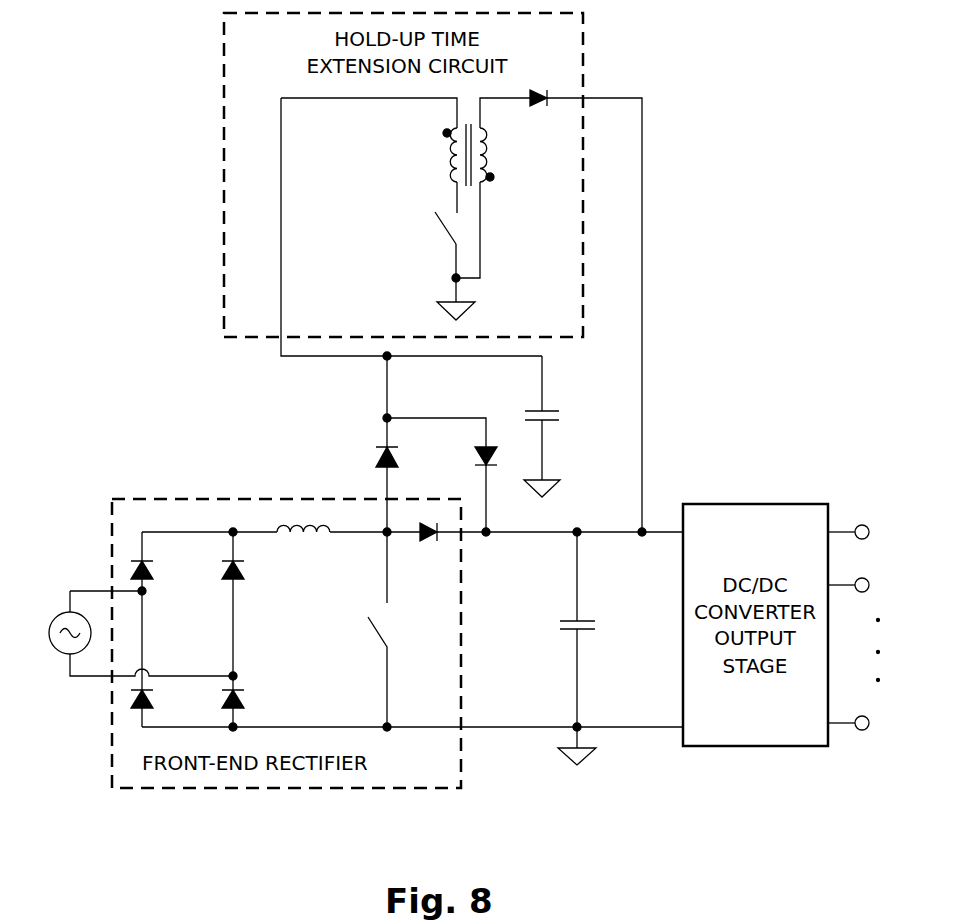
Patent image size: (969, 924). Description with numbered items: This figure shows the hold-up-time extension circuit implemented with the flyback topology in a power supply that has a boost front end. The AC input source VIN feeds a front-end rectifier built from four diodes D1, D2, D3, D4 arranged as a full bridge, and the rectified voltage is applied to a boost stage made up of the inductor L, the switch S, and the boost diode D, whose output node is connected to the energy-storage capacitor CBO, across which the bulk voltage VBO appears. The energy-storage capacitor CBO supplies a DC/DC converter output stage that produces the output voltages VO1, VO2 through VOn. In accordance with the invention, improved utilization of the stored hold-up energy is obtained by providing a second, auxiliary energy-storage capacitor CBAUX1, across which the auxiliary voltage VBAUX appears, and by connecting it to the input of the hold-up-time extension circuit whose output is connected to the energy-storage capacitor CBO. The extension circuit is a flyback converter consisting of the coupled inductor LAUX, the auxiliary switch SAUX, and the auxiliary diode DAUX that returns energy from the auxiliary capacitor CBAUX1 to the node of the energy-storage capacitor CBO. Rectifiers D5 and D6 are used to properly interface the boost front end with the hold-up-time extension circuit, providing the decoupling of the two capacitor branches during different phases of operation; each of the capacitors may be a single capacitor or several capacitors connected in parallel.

The auxiliary inductor (transformer) LAUX is at (438, 155).
The auxiliary diode DAUX is at (544, 117).
The auxiliary switch SAUX is at (419, 233).
The rectifier D5 is at (369, 460).
The rectifier D6 is at (467, 460).
The auxiliary bulk capacitor CBAUX1 is at (511, 426).
The auxiliary bulk voltage VBAUX is at (584, 416).
The input AC voltage source VIN is at (55, 622).
The rectifier diode D1 is at (157, 575).
The rectifier diode D2 is at (157, 705).
The rectifier diode D3 is at (248, 575).
The rectifier diode D4 is at (248, 705).
The boost inductor L is at (303, 548).
The boost diode D is at (428, 550).
The boost switch S is at (363, 629).
The energy-storage capacitor CBO is at (554, 648).
The bulk output voltage VBO is at (612, 624).
The output voltage 1 VO1 is at (870, 537).
The output voltage 2 VO2 is at (870, 590).
The output voltage n VOn is at (870, 728).